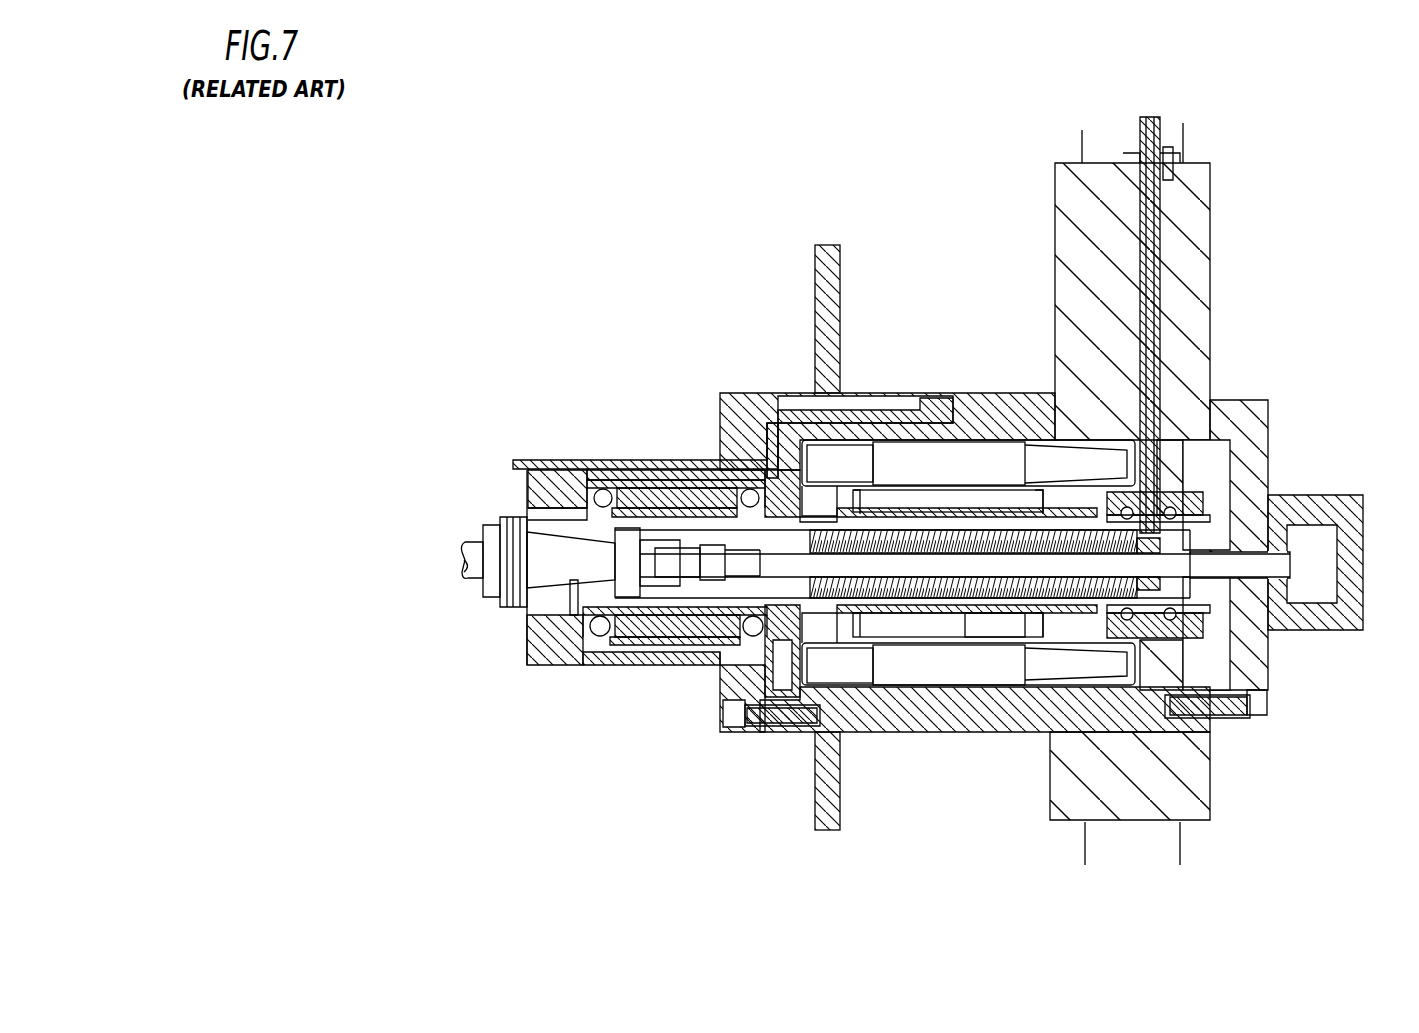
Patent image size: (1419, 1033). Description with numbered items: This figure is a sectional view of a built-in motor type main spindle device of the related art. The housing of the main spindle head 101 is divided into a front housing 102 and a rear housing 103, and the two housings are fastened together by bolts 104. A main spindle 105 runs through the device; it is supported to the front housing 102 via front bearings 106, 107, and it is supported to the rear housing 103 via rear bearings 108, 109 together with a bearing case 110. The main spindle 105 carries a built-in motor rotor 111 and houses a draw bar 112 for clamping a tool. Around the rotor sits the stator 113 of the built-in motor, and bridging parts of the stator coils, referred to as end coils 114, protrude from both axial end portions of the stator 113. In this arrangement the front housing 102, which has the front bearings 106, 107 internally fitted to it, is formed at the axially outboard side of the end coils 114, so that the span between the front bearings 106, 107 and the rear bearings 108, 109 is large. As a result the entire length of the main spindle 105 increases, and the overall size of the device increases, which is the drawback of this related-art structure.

The main spindle head 101 is at (940, 300).
The front housing 102 is at (700, 668).
The rear housing 103 is at (1003, 413).
The bolts 104 is at (728, 732).
The main spindle 105 is at (542, 522).
The front bearing 106 is at (603, 495).
The front bearing 107 is at (742, 470).
The rear bearing 108 is at (1203, 700).
The rear bearing 109 is at (1150, 633).
The bearing case 110 is at (1172, 478).
The built-in motor rotor 111 is at (987, 622).
The draw bar 112 is at (727, 560).
The stator 113 is at (903, 665).
The end coils 114 is at (836, 463).